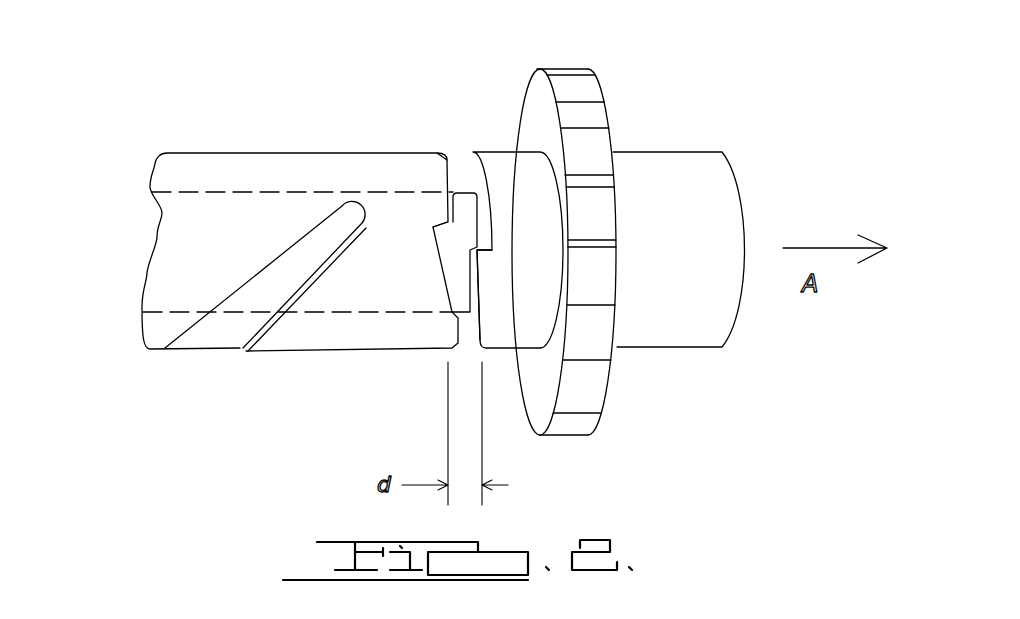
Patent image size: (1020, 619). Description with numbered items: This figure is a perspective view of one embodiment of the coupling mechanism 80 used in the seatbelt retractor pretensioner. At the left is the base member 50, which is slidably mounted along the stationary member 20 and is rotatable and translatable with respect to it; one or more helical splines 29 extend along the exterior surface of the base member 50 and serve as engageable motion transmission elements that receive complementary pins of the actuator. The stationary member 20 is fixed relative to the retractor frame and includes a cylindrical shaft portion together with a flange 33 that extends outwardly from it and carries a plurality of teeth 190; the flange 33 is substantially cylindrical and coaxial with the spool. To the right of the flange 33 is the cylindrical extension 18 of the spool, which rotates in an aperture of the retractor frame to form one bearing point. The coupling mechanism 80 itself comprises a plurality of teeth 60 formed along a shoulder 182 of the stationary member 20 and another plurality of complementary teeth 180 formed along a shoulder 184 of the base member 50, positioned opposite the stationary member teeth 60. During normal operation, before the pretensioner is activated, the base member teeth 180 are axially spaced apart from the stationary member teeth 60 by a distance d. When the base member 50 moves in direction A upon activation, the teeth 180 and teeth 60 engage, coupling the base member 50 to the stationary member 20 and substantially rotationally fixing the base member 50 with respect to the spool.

The cylindrical extension 18 is at (710, 177).
The stationary member 20 is at (447, 155).
The helical splines 29 is at (214, 348).
The flange 33 is at (612, 383).
The base member 50 is at (325, 355).
The stationary member teeth 60 is at (497, 265).
The coupling mechanism 80 is at (870, 448).
The base member teeth 180 is at (442, 213).
The shoulder 182 is at (465, 217).
The shoulder 184 is at (459, 335).
The teeth 190 is at (595, 112).